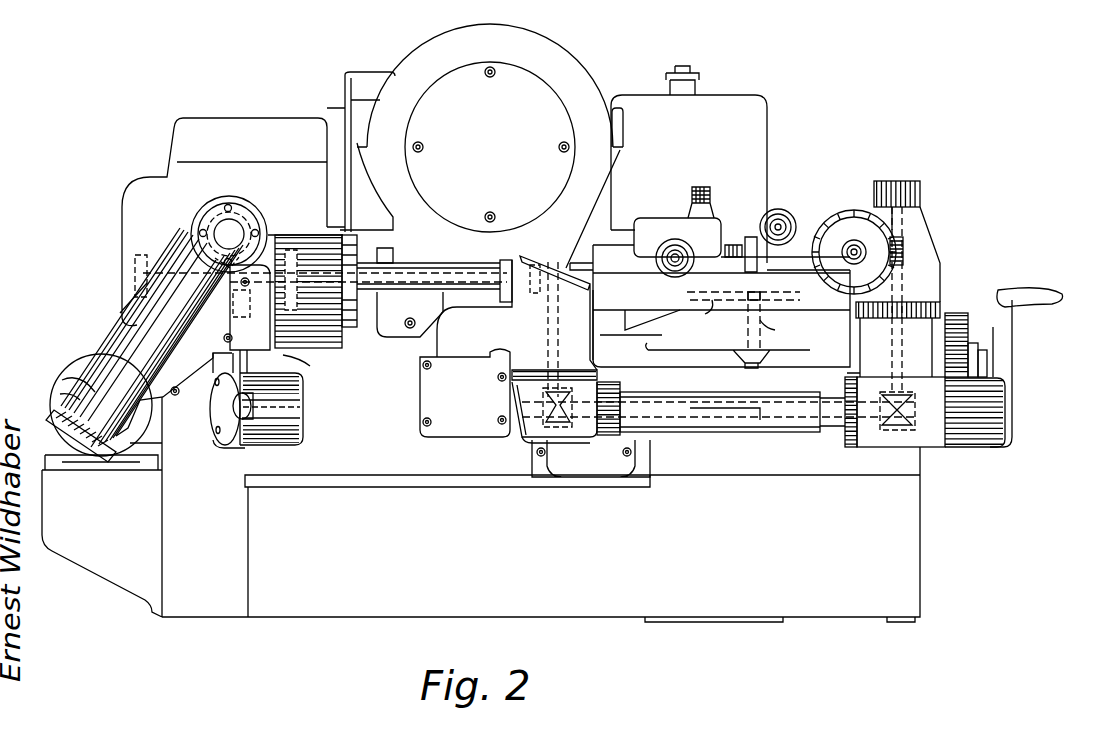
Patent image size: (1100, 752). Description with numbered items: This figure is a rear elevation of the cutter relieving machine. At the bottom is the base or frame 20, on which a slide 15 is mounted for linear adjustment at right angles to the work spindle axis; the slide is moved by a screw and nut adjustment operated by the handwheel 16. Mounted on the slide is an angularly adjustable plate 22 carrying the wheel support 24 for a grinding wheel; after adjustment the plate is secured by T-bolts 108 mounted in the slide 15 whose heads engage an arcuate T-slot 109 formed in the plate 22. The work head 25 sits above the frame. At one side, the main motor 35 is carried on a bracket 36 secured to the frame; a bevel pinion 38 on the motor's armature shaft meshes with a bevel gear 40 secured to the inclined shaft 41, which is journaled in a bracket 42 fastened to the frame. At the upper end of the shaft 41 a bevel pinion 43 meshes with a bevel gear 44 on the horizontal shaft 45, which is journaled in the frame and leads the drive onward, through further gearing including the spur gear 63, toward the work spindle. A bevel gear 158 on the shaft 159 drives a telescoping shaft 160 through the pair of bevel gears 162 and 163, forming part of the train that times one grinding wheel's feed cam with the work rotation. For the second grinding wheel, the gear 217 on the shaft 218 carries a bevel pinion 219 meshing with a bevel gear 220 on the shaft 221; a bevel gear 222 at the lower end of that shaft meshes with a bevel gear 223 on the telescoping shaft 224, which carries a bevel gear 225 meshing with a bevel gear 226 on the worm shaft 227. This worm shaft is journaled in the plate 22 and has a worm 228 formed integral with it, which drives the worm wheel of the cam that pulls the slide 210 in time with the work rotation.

The slide 15 is at (620, 362).
The handwheel 16 is at (1005, 300).
The base or frame 20 is at (762, 596).
The angularly adjustable plate 22 is at (612, 280).
The wheel support 24 is at (745, 146).
The work head 25 is at (573, 78).
The main motor 35 is at (72, 392).
The bracket 36 is at (103, 556).
The bevel pinion 38 is at (92, 408).
The bevel gear 40 is at (95, 365).
The shaft 41 is at (135, 334).
The bracket 42 is at (190, 375).
The bevel pinion 43 is at (207, 232).
The bevel gear 44 is at (246, 228).
The horizontal shaft 45 is at (229, 228).
The spur gear 63 is at (135, 270).
The T-bolts 108 is at (786, 330).
The arcuate T-slot 109 is at (701, 320).
The bevel gear 158 is at (240, 300).
The shaft 159 is at (222, 340).
The telescoping shaft 160 is at (283, 412).
The bevel gear 162 is at (268, 396).
The bevel gear 163 is at (240, 450).
The slide 210 is at (616, 257).
The gear 217 is at (288, 250).
The shaft 218 is at (445, 250).
The bevel pinion 219 is at (560, 268).
The bevel gear 220 is at (545, 290).
The shaft 221 is at (550, 335).
The bevel gear 222 is at (540, 390).
The bevel gear 223 is at (520, 440).
The telescoping shaft 224 is at (688, 432).
The bevel gear 225 is at (935, 420).
The bevel gear 226 is at (895, 415).
The worm shaft 227 is at (905, 290).
The worm 228 is at (905, 258).